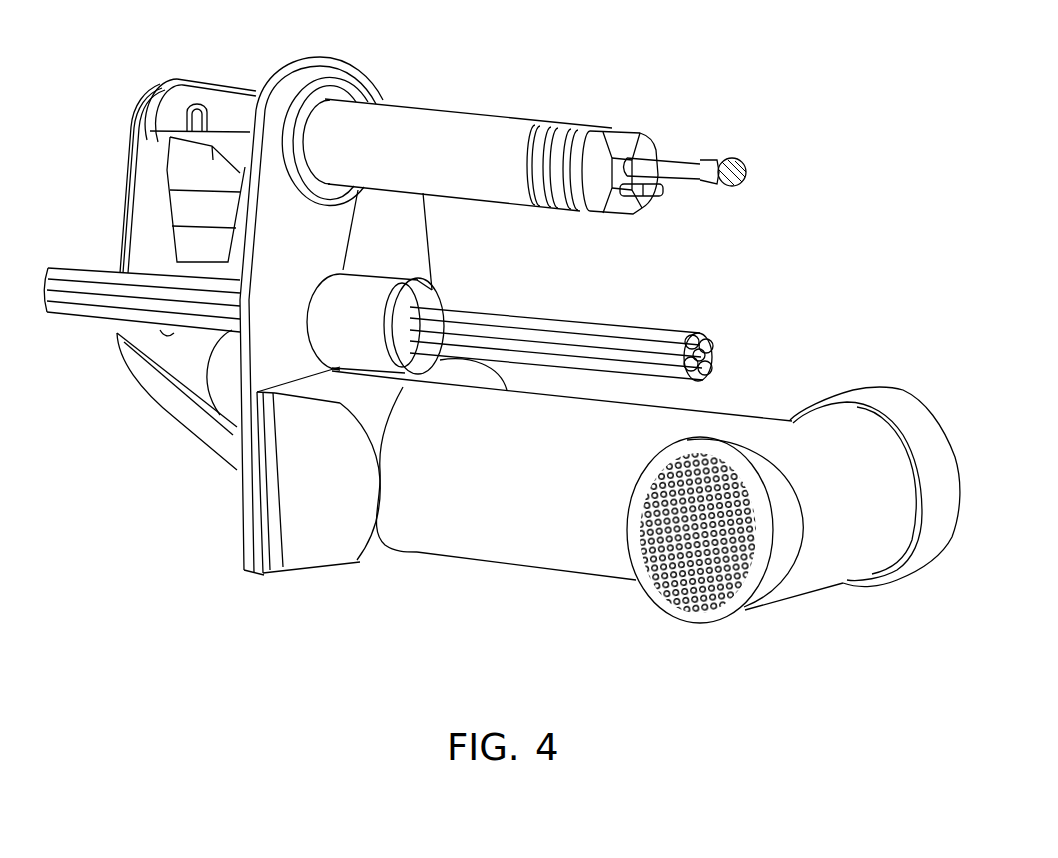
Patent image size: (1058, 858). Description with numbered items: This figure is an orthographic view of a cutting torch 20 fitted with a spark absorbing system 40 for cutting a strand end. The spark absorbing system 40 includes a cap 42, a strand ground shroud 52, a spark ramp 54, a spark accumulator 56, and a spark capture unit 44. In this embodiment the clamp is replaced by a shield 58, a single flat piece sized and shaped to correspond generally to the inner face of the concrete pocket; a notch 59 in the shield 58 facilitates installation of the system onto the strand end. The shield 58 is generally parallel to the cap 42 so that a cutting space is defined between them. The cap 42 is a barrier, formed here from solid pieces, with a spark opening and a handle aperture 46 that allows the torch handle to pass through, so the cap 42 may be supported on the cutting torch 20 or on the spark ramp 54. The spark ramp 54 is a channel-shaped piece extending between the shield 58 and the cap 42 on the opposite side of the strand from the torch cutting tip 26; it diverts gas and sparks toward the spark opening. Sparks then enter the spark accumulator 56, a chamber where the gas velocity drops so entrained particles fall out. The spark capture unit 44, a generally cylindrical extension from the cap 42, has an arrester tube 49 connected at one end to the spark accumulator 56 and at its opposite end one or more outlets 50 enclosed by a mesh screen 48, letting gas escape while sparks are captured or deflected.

The cutting torch 20 is at (498, 96).
The torch cutting tip 26 is at (187, 267).
The spark absorbing system 40 is at (447, 592).
The cap 42 is at (430, 237).
The spark capture unit 44 is at (586, 560).
The handle aperture 46 is at (322, 100).
The mesh screen 48 is at (710, 592).
The arrester tube 49 is at (606, 574).
The outlets 50 is at (690, 455).
The strand ground shroud 52 is at (443, 298).
The spark ramp 54 is at (198, 452).
The spark accumulator 56 is at (373, 552).
The shield 58 is at (127, 198).
The notch 59 is at (170, 330).